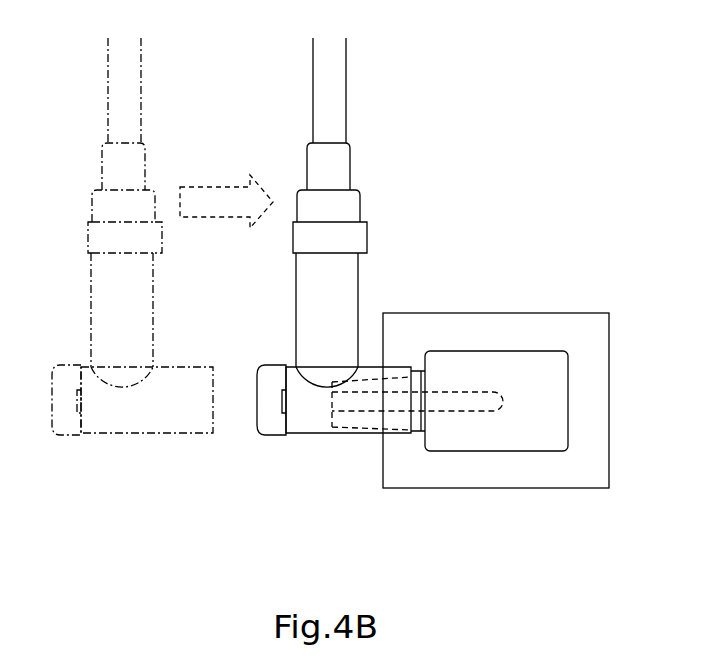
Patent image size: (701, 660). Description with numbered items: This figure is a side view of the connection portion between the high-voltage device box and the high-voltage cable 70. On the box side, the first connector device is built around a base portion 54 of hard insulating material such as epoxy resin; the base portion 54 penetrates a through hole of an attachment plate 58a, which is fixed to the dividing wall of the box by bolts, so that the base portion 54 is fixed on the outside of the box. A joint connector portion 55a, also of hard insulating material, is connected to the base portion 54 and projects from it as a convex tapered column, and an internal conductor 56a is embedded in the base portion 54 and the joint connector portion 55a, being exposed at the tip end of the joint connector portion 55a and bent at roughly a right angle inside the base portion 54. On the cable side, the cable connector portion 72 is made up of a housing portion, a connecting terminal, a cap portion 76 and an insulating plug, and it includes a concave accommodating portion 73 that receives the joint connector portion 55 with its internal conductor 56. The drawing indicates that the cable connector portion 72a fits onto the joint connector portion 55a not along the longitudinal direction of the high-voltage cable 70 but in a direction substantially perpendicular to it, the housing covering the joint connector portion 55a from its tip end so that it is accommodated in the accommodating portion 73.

The high-voltage cable 70 is at (298, 90).
The cable connector portion 72 is at (283, 295).
The cable connector portion 72a is at (227, 265).
The concave accommodating portion 73 is at (315, 435).
The cap portion 76 is at (268, 435).
The joint connector portion 55 is at (370, 435).
The joint connector portion 55a is at (359, 470).
The internal conductor 56 is at (467, 411).
The internal conductor 56a is at (428, 476).
The base portion 54 is at (452, 351).
The attachment plate 58a is at (523, 313).